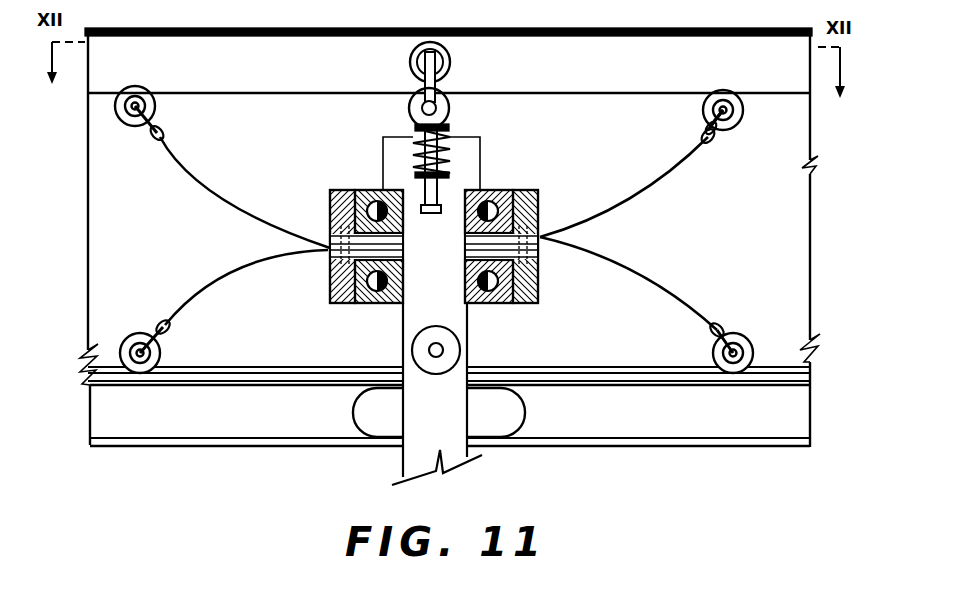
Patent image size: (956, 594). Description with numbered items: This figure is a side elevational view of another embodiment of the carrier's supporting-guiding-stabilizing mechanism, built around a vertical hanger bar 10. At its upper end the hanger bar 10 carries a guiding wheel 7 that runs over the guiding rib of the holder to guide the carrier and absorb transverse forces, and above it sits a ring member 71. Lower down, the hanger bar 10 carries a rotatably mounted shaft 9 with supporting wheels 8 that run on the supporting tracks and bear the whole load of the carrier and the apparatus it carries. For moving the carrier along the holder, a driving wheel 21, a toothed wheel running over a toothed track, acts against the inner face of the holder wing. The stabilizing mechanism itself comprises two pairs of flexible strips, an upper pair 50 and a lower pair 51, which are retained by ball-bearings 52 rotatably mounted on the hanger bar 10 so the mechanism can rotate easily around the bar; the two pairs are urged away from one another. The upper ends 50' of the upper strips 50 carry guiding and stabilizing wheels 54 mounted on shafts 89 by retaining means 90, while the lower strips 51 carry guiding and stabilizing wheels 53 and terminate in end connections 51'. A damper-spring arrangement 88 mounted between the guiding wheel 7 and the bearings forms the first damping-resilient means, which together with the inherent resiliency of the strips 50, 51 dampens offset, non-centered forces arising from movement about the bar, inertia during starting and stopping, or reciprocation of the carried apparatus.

The guiding wheel 7 is at (451, 112).
The supporting wheel 8 is at (414, 339).
The shaft 9 is at (431, 352).
The hanger bar 10 is at (437, 392).
The driving wheel 21 is at (499, 418).
The upper pair of flexible strips 50 is at (434, 192).
The upper ends of the strips 50' is at (728, 140).
The lower pair of flexible strips 51 is at (436, 295).
The lower cable end link 51' is at (174, 124).
The ball-bearing 52 is at (339, 188).
The guiding and stabilizing wheel 53 is at (157, 297).
The guiding and stabilizing wheel 54 is at (154, 86).
The suspension ring 71 is at (453, 63).
The damper-spring arrangement 88 is at (456, 160).
The shaft 89 is at (702, 115).
The retaining means 90 is at (698, 137).